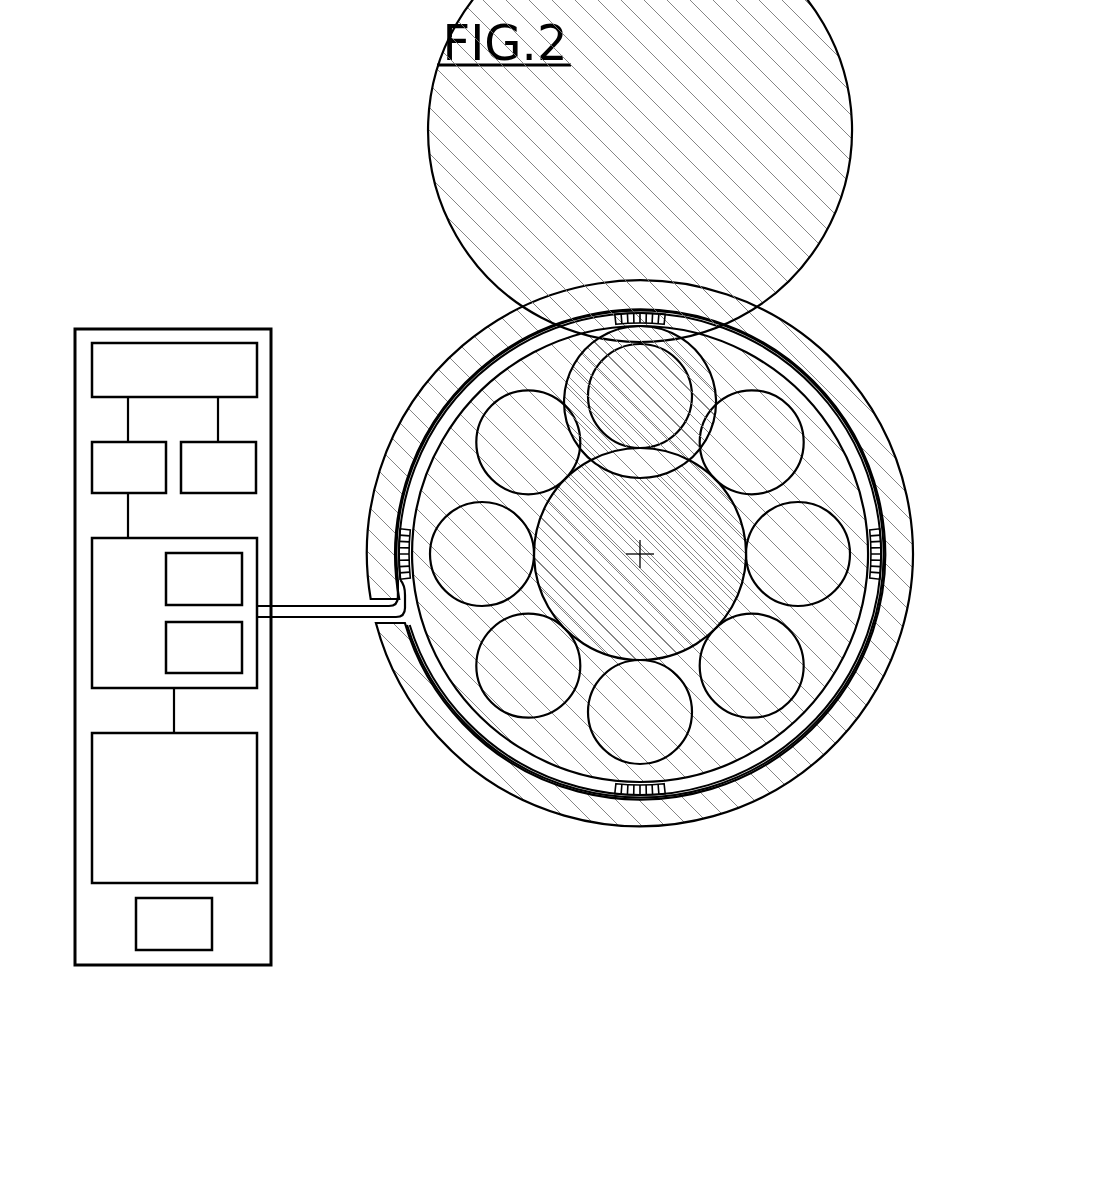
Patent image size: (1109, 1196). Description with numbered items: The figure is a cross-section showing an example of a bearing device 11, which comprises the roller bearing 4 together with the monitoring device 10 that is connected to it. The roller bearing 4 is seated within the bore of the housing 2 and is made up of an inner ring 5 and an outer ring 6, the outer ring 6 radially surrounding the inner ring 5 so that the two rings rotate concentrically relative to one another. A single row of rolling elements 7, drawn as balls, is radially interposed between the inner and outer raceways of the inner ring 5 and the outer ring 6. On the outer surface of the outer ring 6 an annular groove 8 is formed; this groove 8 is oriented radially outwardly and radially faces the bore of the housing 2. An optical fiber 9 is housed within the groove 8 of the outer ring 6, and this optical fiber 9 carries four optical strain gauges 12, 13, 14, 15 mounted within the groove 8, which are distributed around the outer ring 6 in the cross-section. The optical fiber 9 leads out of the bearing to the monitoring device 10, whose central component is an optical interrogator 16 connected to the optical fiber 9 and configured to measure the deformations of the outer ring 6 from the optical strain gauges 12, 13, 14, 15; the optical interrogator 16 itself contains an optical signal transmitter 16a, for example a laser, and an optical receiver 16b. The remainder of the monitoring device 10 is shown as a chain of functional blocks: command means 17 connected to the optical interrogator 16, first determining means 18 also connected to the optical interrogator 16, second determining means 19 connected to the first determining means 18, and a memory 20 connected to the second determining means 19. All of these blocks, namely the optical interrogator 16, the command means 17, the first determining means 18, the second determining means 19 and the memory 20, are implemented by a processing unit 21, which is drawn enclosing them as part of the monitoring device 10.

The housing 2 is at (748, 792).
The roller bearing 4 is at (919, 518).
The inner ring 5 is at (592, 478).
The outer ring 6 is at (575, 342).
The rolling elements 7 is at (770, 440).
The annular groove 8 is at (690, 328).
The optical fiber 9 is at (717, 327).
The monitoring device 10 is at (175, 331).
The bearing device 11 is at (460, 229).
The optical strain gauge 12 is at (400, 548).
The optical strain gauge 13 is at (642, 318).
The optical strain gauge 14 is at (882, 550).
The optical strain gauge 15 is at (642, 792).
The optical interrogator 16 is at (174, 613).
The optical signal transmitter 16a is at (204, 579).
The optical receiver 16b is at (204, 647).
The command means 17 is at (174, 808).
The first determining means 18 is at (129, 467).
The second determining means 19 is at (174, 370).
The memory 20 is at (218, 467).
The processing unit 21 is at (174, 924).